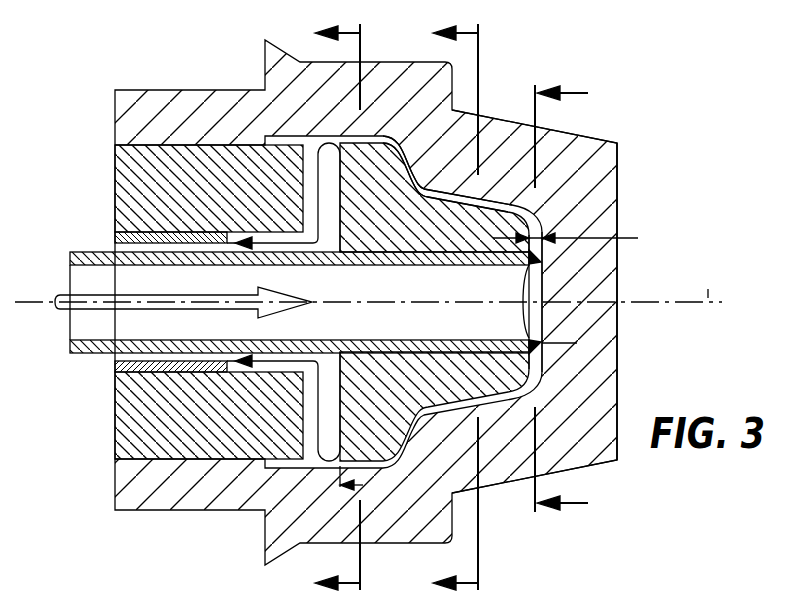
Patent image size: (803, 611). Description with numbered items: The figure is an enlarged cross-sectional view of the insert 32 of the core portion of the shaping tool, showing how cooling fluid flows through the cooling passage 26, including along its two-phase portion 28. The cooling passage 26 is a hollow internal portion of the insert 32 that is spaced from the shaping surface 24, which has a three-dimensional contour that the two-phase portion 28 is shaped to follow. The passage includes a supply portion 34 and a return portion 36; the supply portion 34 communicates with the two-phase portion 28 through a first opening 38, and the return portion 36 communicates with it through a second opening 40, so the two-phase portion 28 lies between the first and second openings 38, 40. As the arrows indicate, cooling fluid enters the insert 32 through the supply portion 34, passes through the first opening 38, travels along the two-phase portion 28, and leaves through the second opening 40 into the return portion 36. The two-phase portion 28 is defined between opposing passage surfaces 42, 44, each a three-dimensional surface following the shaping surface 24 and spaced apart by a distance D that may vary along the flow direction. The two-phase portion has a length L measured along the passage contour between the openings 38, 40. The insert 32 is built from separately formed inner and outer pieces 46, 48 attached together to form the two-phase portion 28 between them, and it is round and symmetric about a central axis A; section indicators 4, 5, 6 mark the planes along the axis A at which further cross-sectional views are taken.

The shaping surface 24 is at (606, 140).
The cooling passage 26 is at (312, 162).
The two-phase portion 28 is at (524, 392).
The insert 32 is at (68, 85).
The supply portion 34 is at (72, 283).
The return portion 36 is at (312, 406).
The first opening 38 is at (543, 260).
The second opening 40 is at (329, 141).
The passage surface 42 is at (383, 138).
The passage surface 44 is at (424, 194).
The inner piece 46 is at (462, 197).
The outer piece 48 is at (610, 162).
The section line 4- 4 is at (573, 301).
The section line 5- 5 is at (445, 307).
The section line 6- 6 is at (328, 307).
The central axis A is at (368, 282).
The distance D is at (580, 238).
The length L is at (425, 462).